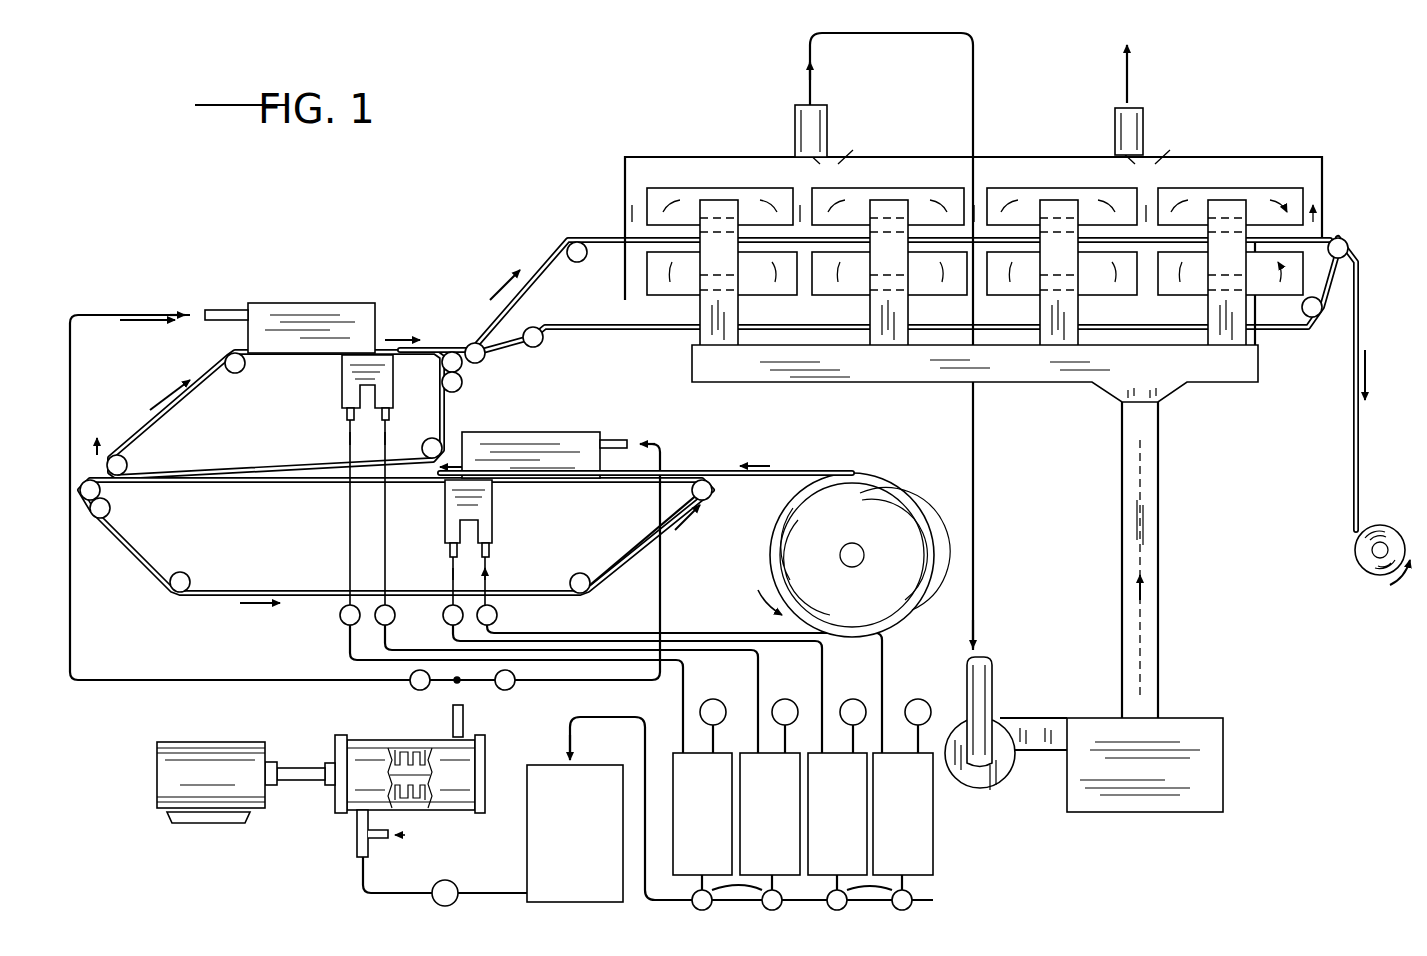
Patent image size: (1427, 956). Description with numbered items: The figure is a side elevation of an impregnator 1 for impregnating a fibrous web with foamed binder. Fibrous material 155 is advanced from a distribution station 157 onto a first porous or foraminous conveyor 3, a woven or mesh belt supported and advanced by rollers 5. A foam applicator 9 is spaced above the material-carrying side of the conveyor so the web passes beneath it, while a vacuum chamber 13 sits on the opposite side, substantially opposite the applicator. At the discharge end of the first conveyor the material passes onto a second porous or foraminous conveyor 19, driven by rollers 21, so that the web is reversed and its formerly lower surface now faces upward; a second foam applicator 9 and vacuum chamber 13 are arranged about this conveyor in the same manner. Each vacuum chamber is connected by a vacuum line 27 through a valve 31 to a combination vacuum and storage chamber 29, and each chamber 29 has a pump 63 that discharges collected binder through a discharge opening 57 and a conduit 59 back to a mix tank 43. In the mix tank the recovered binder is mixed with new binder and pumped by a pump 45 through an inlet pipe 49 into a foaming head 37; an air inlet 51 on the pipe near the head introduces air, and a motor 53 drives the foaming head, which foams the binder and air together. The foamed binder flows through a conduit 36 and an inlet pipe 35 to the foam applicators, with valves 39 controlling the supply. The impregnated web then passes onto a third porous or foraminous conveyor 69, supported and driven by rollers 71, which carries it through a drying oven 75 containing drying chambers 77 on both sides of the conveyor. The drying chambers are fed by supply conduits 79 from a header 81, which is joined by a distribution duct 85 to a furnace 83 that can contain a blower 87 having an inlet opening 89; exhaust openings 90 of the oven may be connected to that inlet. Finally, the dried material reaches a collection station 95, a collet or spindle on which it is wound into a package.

The impregnator 1 is at (413, 265).
The first porous or foraminous conveyor 3 is at (695, 520).
The rollers 5 is at (188, 572).
The foam applicator 9 is at (340, 300).
The vacuum chamber 13 is at (340, 374).
The second porous or foraminous conveyor 19 is at (195, 400).
The rollers 21 is at (135, 460).
The vacuum line 27 is at (345, 425).
The vacuum and storage chamber 29 is at (713, 752).
The valve 31 is at (340, 620).
The inlet pipe 35 is at (225, 300).
The conduit 36 is at (90, 635).
The foaming head 37 is at (490, 762).
The valve 39 is at (408, 686).
The mix tank 43 is at (548, 846).
The pump 45 is at (458, 882).
The inlet pipe 49 is at (355, 845).
The air inlet 51 is at (390, 840).
The motor 53 is at (155, 777).
The discharge opening 57 is at (745, 888).
The conduit 59 is at (640, 745).
The pump 63 is at (785, 699).
The third porous or foraminous conveyor 69 is at (597, 335).
The rollers 71 is at (585, 262).
The drying oven 75 is at (1258, 157).
The drying chambers 77 is at (710, 188).
The supply conduit 79 is at (868, 310).
The header 81 is at (1240, 385).
The furnace 83 is at (1228, 762).
The distribution duct 85 is at (1165, 575).
The blower 87 is at (1010, 780).
The inlet opening 89 is at (990, 718).
The exhaust openings 90 is at (828, 130).
The collection station 95 is at (1388, 522).
The fibrous material 155 is at (830, 475).
The distribution station 157 is at (918, 490).